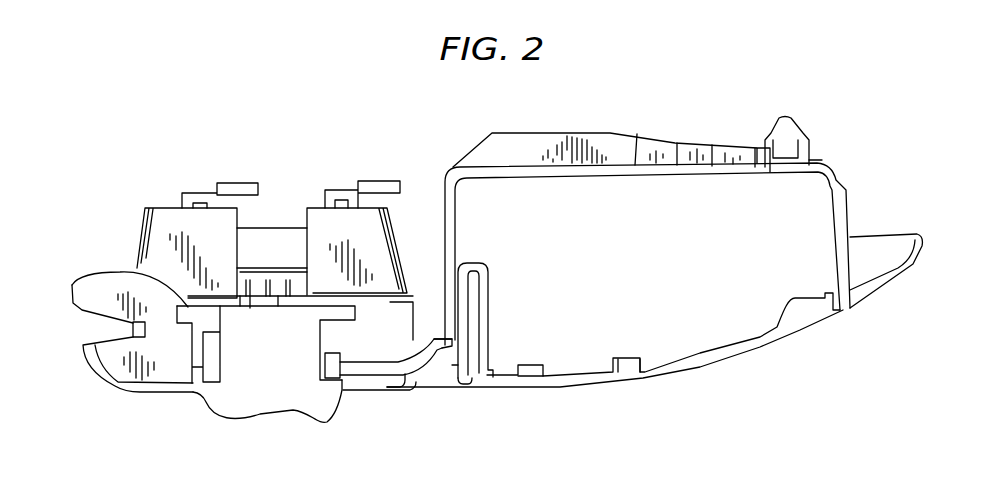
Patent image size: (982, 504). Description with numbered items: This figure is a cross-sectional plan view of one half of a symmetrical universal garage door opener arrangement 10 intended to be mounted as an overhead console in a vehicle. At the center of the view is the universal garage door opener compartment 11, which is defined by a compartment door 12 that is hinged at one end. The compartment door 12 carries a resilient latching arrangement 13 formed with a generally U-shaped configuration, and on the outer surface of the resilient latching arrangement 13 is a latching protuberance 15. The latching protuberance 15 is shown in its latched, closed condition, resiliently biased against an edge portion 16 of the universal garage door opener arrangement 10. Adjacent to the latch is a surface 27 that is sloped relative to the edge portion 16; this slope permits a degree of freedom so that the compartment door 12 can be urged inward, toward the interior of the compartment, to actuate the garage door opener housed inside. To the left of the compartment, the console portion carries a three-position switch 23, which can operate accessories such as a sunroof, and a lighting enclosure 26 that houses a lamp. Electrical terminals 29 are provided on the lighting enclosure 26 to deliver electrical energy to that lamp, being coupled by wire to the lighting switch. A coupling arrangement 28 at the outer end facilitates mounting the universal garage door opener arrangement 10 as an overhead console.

The universal garage door opener arrangement 10 is at (560, 429).
The universal garage door opener compartment 11 is at (655, 276).
The compartment door 12 is at (673, 375).
The resilient latching arrangement 13 is at (490, 312).
The latching protuberance 15 is at (448, 330).
The edge portion 16 is at (530, 150).
The three-position switch 23 is at (295, 405).
The lighting enclosure 26 is at (163, 215).
The surface 27 is at (452, 366).
The coupling arrangement 28 is at (122, 366).
The electrical terminals 29 is at (248, 188).